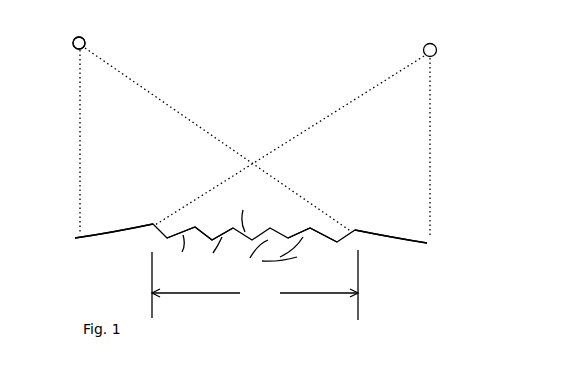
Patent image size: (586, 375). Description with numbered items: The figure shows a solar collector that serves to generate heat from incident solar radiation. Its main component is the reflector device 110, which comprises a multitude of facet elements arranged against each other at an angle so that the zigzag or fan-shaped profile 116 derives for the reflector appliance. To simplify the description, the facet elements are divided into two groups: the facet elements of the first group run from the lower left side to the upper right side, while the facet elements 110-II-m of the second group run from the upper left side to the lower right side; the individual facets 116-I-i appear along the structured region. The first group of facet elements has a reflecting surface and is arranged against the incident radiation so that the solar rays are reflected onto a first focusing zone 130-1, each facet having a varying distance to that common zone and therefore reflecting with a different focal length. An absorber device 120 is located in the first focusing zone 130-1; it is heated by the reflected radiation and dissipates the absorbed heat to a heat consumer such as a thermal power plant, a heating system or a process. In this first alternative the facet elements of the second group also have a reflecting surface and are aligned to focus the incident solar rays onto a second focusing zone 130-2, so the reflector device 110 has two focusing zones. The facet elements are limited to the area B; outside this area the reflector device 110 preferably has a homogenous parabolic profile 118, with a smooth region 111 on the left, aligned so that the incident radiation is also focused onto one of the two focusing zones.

The first focusing zone 130-1 is at (76, 37).
The absorber device 120 is at (96, 31).
The second focusing zone 130-2 is at (429, 43).
The reflector device 110 is at (432, 231).
The smooth surface region 111 is at (105, 231).
The facet elements of the second group 110-II-m is at (283, 227).
The surface facets 116-I-i is at (242, 245).
The zigzag or fan-shaped profile 116 is at (305, 218).
The homogenous parabolic profile 118 is at (397, 238).
The area B is at (255, 285).